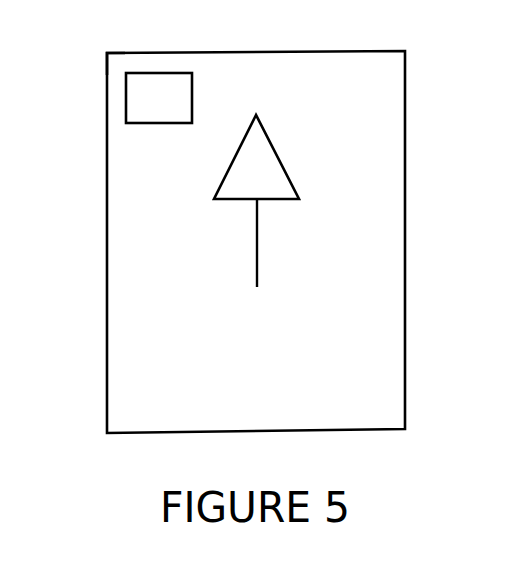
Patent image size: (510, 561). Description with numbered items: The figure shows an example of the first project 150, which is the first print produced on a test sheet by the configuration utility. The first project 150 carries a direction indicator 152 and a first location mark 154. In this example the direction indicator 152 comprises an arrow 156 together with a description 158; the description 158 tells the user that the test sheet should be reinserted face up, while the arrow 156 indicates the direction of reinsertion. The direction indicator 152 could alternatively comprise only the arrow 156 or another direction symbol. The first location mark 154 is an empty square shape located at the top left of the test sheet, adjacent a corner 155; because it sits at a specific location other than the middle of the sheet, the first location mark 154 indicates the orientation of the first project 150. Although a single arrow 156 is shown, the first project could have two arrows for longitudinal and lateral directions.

The first project 150 is at (318, 51).
The direction indicator 152 is at (363, 218).
The first location mark 154 is at (159, 85).
The corner 155 is at (117, 63).
The arrow 156 is at (269, 145).
The description 158 is at (373, 325).